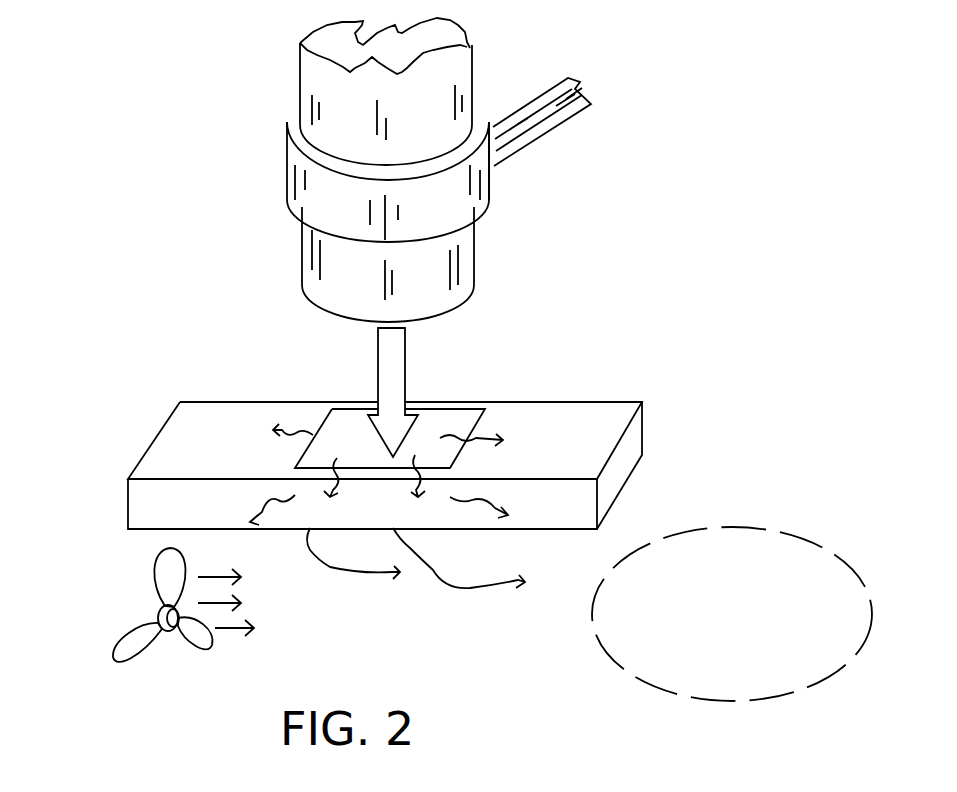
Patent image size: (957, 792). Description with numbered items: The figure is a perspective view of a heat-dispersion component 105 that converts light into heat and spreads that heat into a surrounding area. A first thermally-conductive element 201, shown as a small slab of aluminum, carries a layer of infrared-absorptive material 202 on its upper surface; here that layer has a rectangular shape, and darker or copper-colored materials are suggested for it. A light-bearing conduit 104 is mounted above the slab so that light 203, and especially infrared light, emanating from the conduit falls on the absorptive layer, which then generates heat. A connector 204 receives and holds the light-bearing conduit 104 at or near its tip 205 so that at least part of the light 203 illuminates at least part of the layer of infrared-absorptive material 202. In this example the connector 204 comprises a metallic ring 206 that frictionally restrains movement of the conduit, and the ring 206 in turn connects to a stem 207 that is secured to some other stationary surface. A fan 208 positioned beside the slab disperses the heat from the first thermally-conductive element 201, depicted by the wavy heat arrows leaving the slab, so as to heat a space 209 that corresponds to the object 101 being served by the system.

The object 101 is at (437, 654).
The light-bearing conduit 104 is at (320, 78).
The heat-dispersion component 105 is at (607, 343).
The first thermally-conductive element 201 is at (215, 402).
The layer of infrared-absorptive material 202 is at (352, 410).
The light 203 is at (397, 357).
The connector 204 is at (488, 210).
The tip 205 is at (312, 286).
The metallic ring 206 is at (335, 190).
The stem 207 is at (538, 128).
The fan 208 is at (157, 582).
The space 209 is at (660, 690).